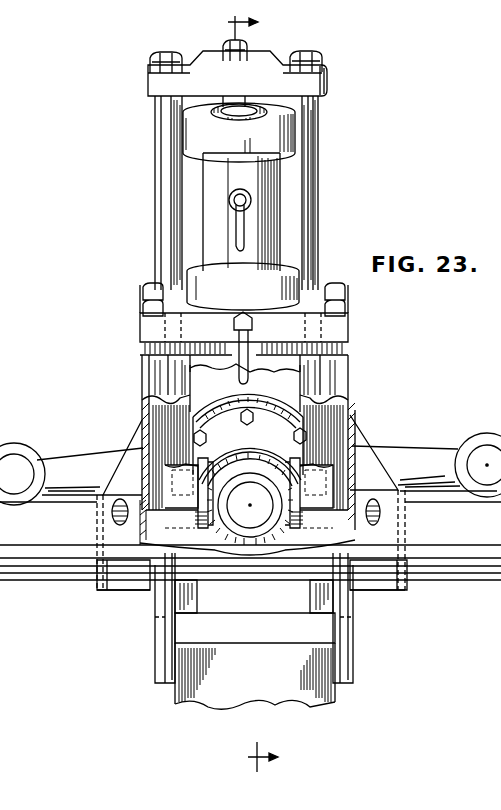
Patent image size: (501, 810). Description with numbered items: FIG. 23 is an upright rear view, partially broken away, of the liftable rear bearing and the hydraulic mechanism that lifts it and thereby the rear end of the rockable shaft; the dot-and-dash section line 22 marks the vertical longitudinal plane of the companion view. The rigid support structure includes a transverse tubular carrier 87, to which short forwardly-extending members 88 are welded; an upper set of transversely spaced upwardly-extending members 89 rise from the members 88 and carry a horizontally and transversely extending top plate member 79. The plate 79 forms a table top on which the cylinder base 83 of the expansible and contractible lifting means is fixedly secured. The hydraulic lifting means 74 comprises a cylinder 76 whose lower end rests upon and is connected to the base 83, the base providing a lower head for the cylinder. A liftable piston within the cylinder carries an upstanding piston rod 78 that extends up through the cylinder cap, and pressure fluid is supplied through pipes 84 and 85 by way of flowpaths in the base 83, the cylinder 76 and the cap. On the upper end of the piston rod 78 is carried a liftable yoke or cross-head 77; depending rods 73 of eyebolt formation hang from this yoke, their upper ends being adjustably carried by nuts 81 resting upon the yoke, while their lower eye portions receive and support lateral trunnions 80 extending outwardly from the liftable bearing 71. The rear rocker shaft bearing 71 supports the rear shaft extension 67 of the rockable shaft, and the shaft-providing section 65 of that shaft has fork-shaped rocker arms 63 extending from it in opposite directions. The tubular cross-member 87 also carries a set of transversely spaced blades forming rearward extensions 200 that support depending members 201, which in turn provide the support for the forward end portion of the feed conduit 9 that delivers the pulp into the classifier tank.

The section line 22— 22 is at (231, 393).
The nuts 81 is at (152, 55).
The liftable yoke or cross-head 77 is at (150, 85).
The piston rod 78 is at (300, 100).
The depending rods 73 is at (158, 160).
The hydraulic lifting means 74 is at (184, 206).
The cylinder 76 is at (208, 220).
The pipe 85 is at (243, 228).
The cylinder base 83 is at (148, 322).
The pipe 84 is at (255, 330).
The top plate member 79 is at (348, 342).
The upwardly-extending members 89 is at (158, 382).
The shaft-providing section 65 is at (245, 379).
The rear rocker shaft bearing 71 is at (251, 462).
The rear shaft extension 67 is at (251, 545).
The rocker arms 63 is at (88, 455).
The lateral trunnions 80 is at (140, 458).
The transverse tubular carrier 87 is at (250, 546).
The forwardly-extending members 88 is at (133, 590).
The rearward extensions 200 is at (197, 582).
The depending members 201 is at (355, 632).
The feed conduit 9 is at (255, 661).